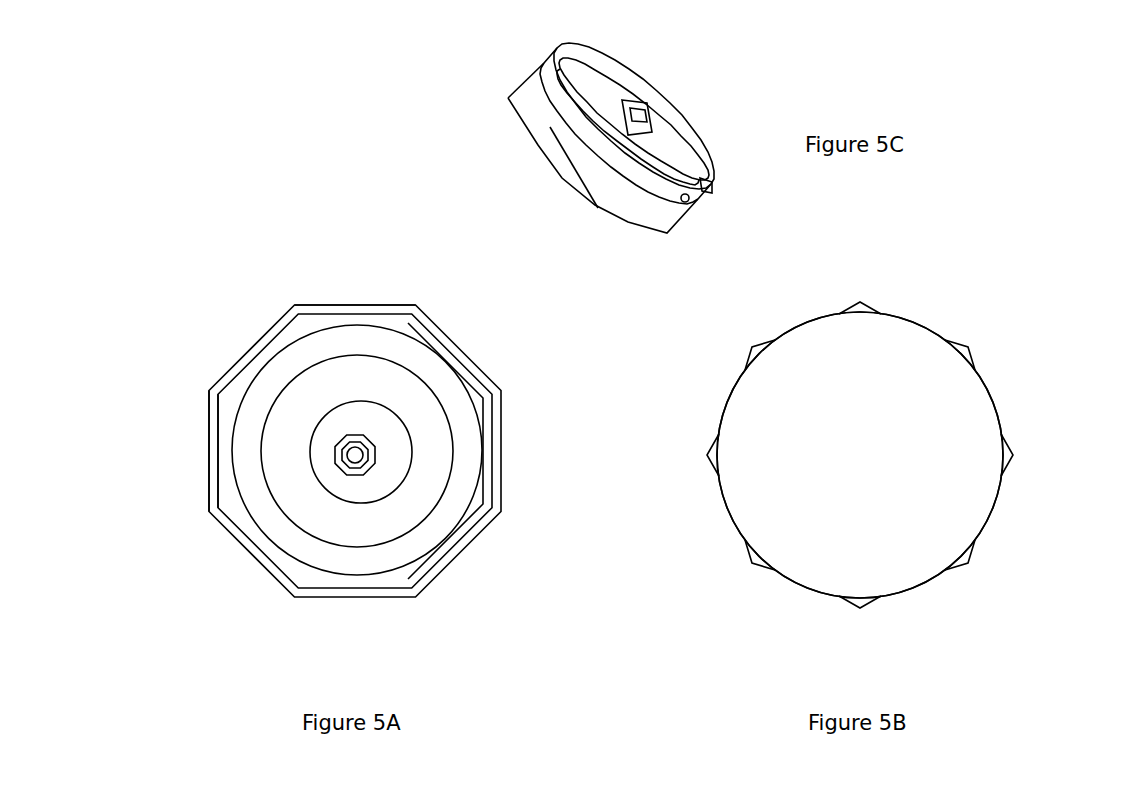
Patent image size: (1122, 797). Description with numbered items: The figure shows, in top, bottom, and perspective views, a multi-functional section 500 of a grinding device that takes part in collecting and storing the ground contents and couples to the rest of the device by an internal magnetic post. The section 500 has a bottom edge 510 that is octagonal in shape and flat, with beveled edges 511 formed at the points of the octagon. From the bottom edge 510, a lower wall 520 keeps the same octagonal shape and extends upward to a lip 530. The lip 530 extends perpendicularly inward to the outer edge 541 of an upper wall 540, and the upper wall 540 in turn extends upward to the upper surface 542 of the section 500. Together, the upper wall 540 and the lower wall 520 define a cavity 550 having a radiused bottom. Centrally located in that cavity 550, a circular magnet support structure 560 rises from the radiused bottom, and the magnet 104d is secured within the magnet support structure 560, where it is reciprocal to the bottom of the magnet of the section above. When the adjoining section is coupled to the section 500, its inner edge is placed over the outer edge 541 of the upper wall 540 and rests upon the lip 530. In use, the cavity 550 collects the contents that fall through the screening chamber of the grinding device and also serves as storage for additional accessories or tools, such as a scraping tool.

In FIG. 5A, the multi-functional section 500 is at (255, 122).
In FIG. 5A, the lip 530 is at (537, 67).
In FIG. 5C, the lip 530 is at (627, 123).
In FIG. 5A, the upper wall 540 is at (563, 89).
In FIG. 5C, the upper wall 540 is at (608, 145).
In FIG. 5A, the outer edge 541 is at (218, 458).
In FIG. 5A, the upper surface 542 is at (231, 506).
In FIG. 5A, the cavity 550 is at (431, 460).
In FIG. 5C, the cavity 550 is at (628, 127).
In FIG. 5A, the magnet support structure 560 is at (375, 443).
In FIG. 5C, the magnet support structure 560 is at (637, 117).
In FIG. 5A, the magnet 104d is at (357, 456).
In FIG. 5B, the lower wall 520 is at (693, 219).
In FIG. 5C, the lower wall 520 is at (696, 190).
In FIG. 5B, the bottom edge 510 is at (876, 446).
In FIG. 5B, the beveled edges 511 is at (1015, 457).